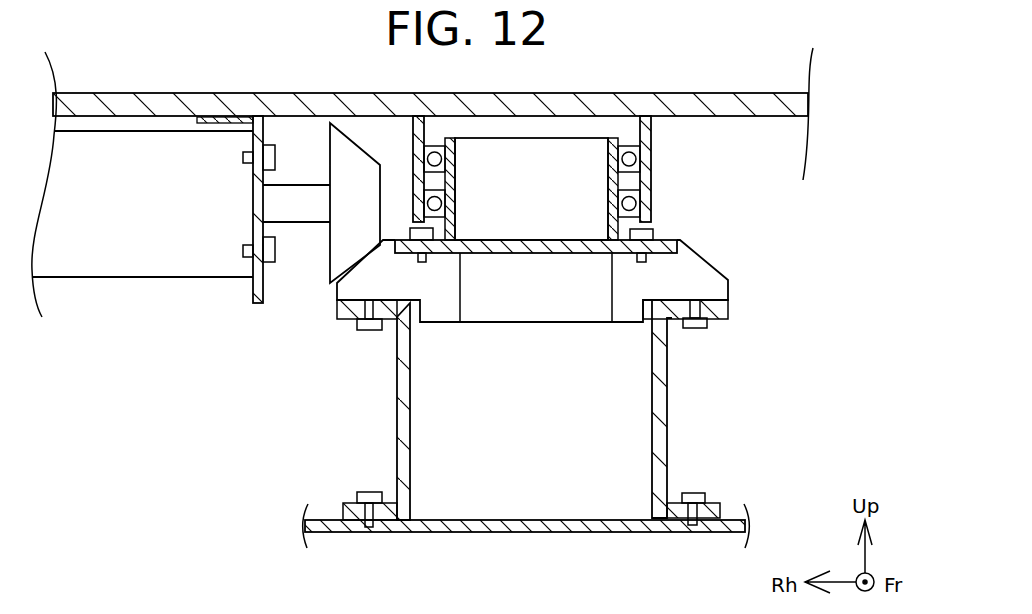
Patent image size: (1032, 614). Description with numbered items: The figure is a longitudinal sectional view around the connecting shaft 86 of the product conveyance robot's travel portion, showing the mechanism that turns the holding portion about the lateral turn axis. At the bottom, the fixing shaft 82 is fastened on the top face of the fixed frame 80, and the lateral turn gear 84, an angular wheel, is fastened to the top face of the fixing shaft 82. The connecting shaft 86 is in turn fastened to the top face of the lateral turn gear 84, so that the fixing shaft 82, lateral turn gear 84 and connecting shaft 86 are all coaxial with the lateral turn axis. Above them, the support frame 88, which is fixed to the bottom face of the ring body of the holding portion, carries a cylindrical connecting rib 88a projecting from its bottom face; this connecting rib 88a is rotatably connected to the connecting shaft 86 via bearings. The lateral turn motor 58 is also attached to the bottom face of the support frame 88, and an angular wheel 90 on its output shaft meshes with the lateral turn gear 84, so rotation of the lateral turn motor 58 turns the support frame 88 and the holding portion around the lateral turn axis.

The support frame 88 is at (650, 93).
The connecting rib 88a is at (652, 132).
The connecting shaft 86 is at (630, 177).
The lateral turn gear 84 is at (705, 272).
The fixing shaft 82 is at (667, 400).
The fixed frame 80 is at (490, 532).
The angular wheel 90 is at (332, 247).
The lateral turn motor 58 is at (120, 258).